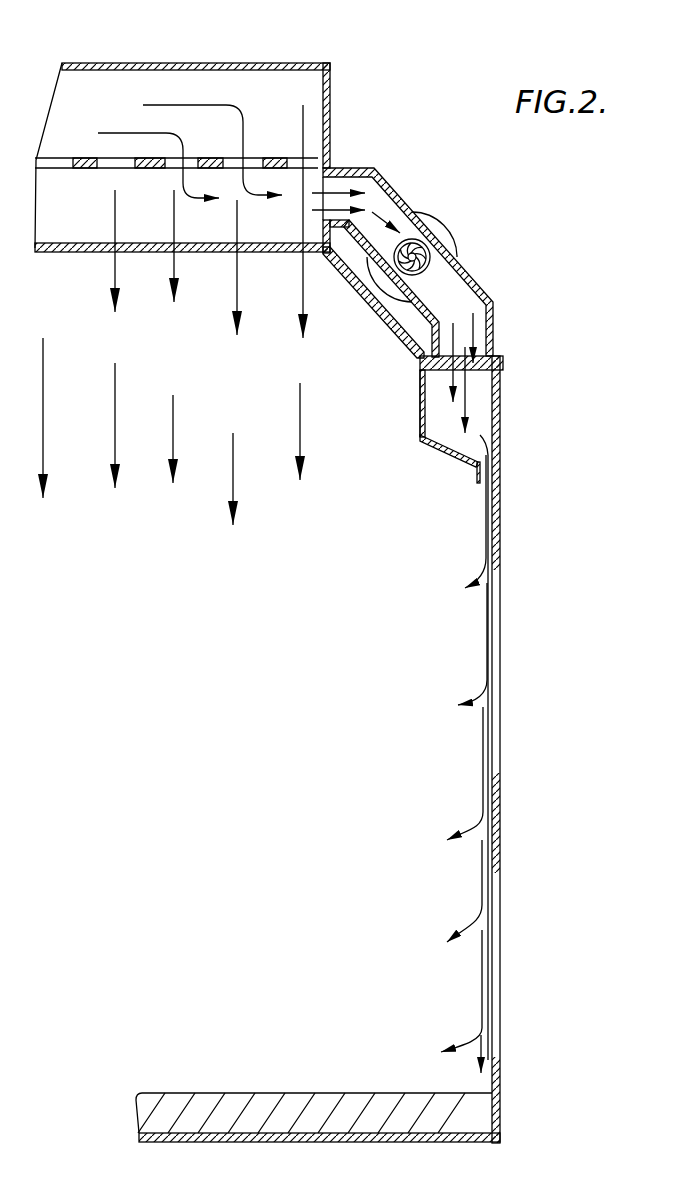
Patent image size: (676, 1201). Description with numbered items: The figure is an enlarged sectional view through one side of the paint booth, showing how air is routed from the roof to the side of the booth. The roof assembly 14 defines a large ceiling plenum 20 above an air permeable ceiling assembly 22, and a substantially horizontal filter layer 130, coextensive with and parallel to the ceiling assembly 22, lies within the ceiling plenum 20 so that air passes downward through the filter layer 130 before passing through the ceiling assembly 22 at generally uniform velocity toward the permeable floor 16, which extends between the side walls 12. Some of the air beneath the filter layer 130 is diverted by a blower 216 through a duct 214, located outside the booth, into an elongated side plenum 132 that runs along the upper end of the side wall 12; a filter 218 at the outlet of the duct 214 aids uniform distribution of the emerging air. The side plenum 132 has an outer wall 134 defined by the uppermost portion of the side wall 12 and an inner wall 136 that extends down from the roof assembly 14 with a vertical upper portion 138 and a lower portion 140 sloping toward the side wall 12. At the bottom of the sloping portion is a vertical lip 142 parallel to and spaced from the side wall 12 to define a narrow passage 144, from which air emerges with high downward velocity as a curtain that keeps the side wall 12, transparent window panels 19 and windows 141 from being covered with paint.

The side wall 12 is at (503, 507).
The roof assembly 14 is at (213, 48).
The permeable floor 16 is at (260, 1082).
The transparent window panel 19 is at (502, 685).
The ceiling plenum 20 is at (260, 90).
The air permeable ceiling assembly 22 is at (92, 205).
The filter layer 130 is at (73, 158).
The side plenum 132 is at (475, 405).
The outer wall 134 is at (490, 435).
The inner wall 136 is at (415, 427).
The vertical upper portion 138 is at (420, 400).
The lower portion 140 is at (447, 457).
The window 141 is at (498, 922).
The lip 142 is at (473, 468).
The passage 144 is at (478, 492).
The duct 214 is at (402, 192).
The blower 216 is at (452, 257).
The filter 218 is at (500, 356).